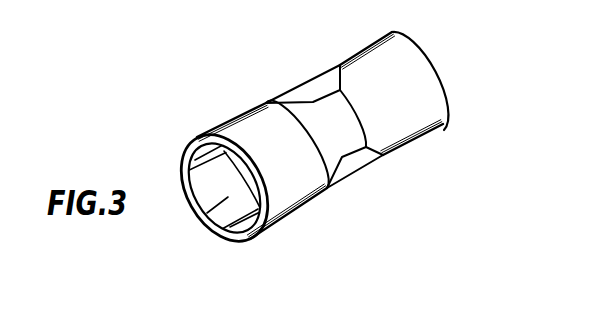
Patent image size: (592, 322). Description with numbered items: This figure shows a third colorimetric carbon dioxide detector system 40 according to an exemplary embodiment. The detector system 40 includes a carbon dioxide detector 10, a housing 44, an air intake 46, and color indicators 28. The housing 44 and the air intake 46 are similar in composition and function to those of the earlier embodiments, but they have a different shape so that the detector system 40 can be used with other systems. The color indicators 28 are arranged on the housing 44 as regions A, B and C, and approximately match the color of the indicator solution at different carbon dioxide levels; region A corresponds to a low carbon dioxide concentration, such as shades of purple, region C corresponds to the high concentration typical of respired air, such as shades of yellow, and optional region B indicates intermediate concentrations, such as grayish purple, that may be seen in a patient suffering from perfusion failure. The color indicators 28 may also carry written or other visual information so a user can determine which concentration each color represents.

The carbon dioxide detector 10 is at (355, 131).
The color indicators 28 is at (320, 77).
The detector system 40 is at (222, 76).
The housing 44 is at (308, 196).
The air intake 46 is at (204, 220).